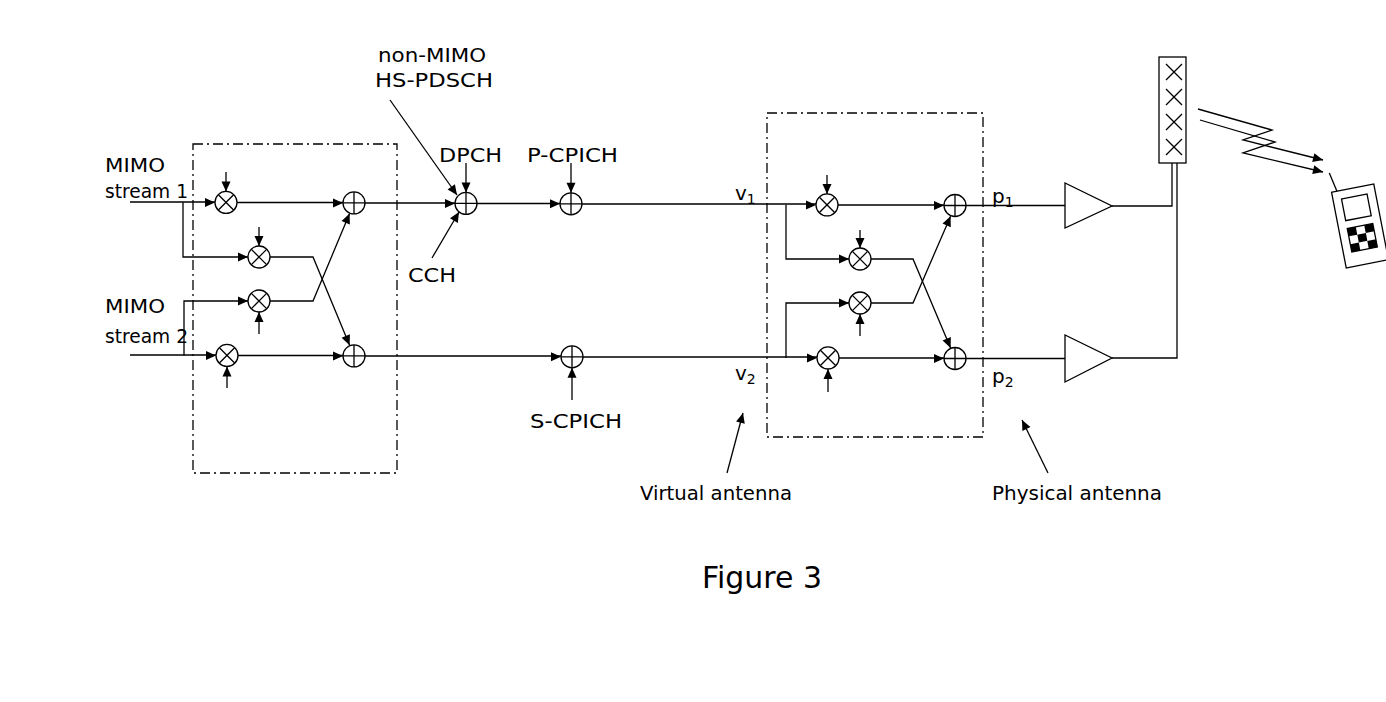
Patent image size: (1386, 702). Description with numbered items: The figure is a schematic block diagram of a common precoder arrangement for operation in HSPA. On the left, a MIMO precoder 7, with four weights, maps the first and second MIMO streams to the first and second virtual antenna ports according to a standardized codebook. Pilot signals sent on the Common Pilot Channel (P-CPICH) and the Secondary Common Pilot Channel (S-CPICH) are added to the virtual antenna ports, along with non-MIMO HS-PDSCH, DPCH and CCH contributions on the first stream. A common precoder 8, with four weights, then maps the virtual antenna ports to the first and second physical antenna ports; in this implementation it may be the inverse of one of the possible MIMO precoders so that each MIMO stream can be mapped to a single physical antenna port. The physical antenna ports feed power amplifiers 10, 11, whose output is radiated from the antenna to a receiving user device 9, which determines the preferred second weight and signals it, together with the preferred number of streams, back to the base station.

The MIMO precoder 7 is at (290, 308).
The common precoder 8 is at (875, 275).
The receiving user device 9 is at (1340, 218).
The power amplifier 10 is at (1083, 188).
The power amplifier 11 is at (1084, 338).